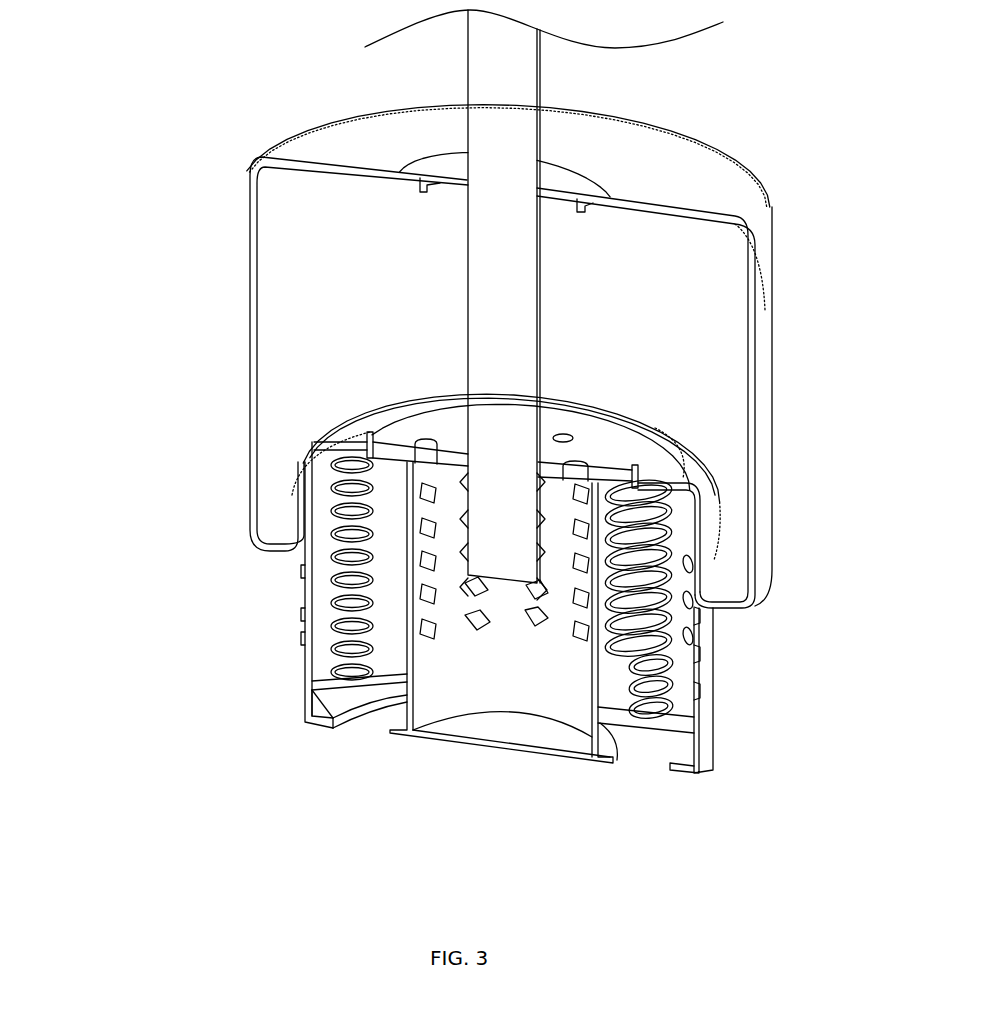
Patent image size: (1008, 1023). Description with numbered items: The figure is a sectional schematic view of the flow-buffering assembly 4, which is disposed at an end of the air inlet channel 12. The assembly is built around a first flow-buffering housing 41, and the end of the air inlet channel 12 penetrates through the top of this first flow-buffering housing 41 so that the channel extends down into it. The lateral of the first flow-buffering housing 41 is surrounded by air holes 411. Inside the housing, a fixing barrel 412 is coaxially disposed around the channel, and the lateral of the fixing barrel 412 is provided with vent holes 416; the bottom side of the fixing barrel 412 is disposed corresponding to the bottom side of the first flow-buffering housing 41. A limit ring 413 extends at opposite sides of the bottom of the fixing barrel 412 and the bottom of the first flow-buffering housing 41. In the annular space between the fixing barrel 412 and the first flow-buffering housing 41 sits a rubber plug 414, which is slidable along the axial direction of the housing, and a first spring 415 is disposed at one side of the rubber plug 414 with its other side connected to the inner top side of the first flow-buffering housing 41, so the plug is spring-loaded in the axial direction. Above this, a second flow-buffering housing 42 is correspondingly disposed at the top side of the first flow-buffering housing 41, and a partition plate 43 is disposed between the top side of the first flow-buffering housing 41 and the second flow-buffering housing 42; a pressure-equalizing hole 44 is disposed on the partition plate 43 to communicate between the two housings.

The flow-buffering assembly 4 is at (181, 357).
The air inlet channel 12 is at (537, 285).
The first flow-buffering housing 41 is at (707, 735).
The second flow-buffering housing 42 is at (773, 467).
The partition plate 43 is at (613, 447).
The pressure-equalizing hole 44 is at (565, 438).
The air holes 411 is at (702, 613).
The fixing barrel 412 is at (522, 727).
The limit ring 413 is at (327, 728).
The rubber plug 414 is at (320, 680).
The first spring 415 is at (335, 612).
The vent holes 416 is at (470, 623).